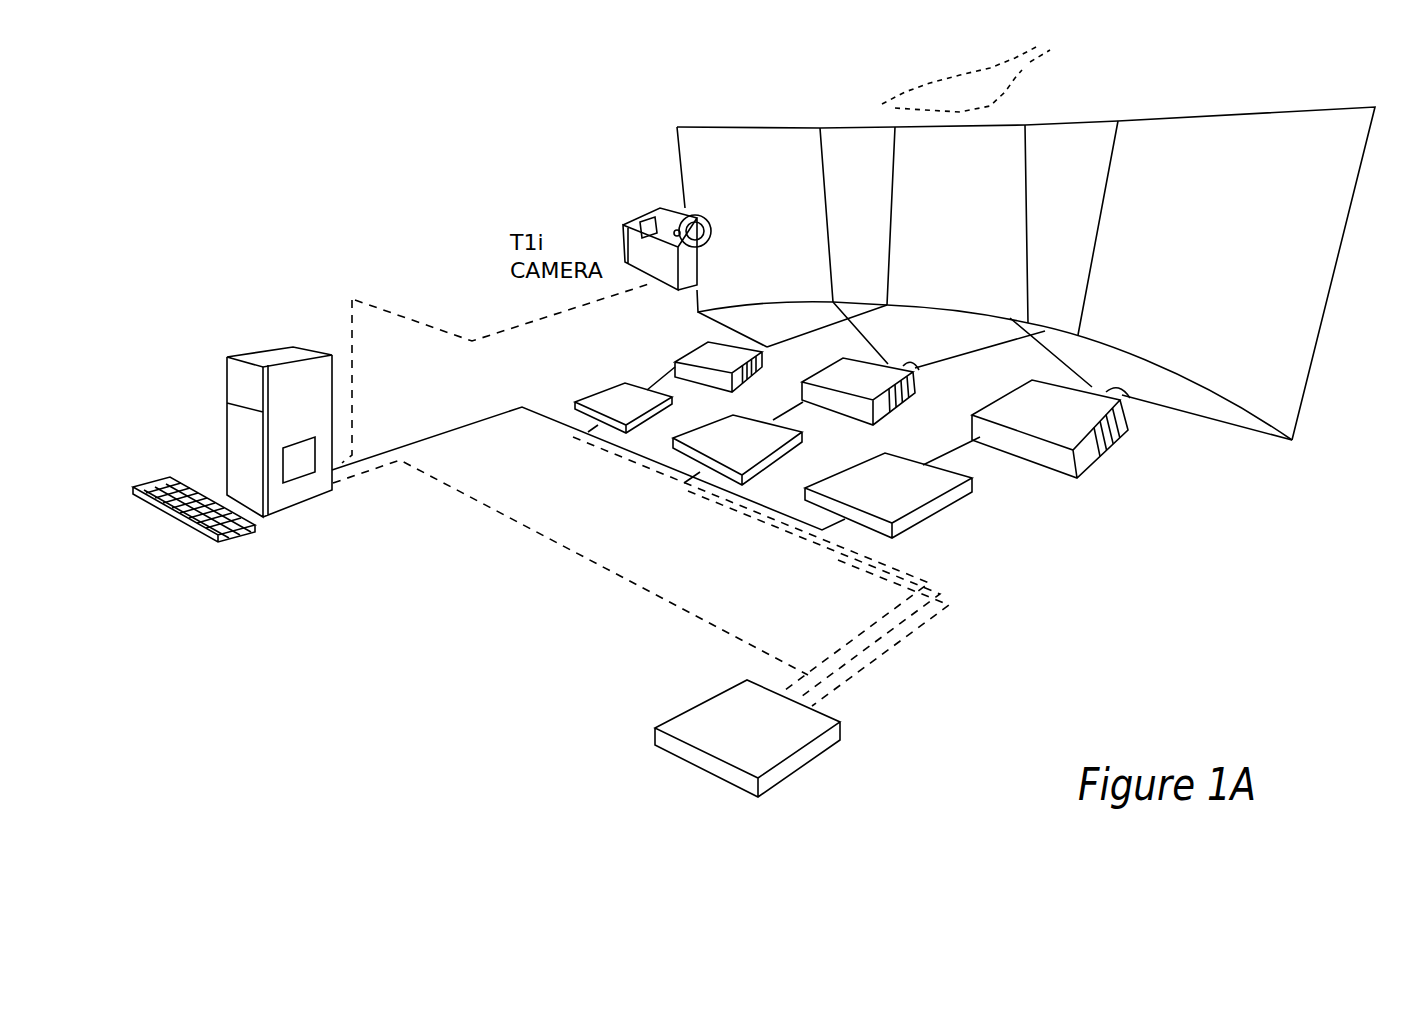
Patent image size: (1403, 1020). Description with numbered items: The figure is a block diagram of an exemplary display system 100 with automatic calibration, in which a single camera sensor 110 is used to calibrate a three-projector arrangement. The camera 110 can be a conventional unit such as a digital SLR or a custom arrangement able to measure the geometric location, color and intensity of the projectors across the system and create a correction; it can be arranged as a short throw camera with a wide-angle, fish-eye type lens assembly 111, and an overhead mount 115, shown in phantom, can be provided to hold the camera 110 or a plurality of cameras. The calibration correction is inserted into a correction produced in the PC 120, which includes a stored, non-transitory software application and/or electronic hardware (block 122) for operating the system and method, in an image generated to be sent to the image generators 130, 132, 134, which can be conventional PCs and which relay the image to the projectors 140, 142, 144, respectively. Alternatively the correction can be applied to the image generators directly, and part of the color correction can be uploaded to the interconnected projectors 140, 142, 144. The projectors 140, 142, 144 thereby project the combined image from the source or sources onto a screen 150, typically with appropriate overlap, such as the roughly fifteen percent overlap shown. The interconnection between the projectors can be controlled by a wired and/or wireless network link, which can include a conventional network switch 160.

The display system 100 is at (1108, 104).
The camera sensor 110 is at (631, 220).
The lens assembly 111 is at (695, 208).
The overhead mount 115 is at (1058, 27).
The PC 120 is at (296, 392).
The software application block 122 is at (298, 467).
The image generator 130 is at (607, 385).
The image generator 132 is at (708, 420).
The image generator 134 is at (953, 507).
The projector 140 is at (693, 347).
The projector 142 is at (885, 422).
The projector 144 is at (1017, 455).
The screen 150 is at (1220, 117).
The network switch 160 is at (807, 750).